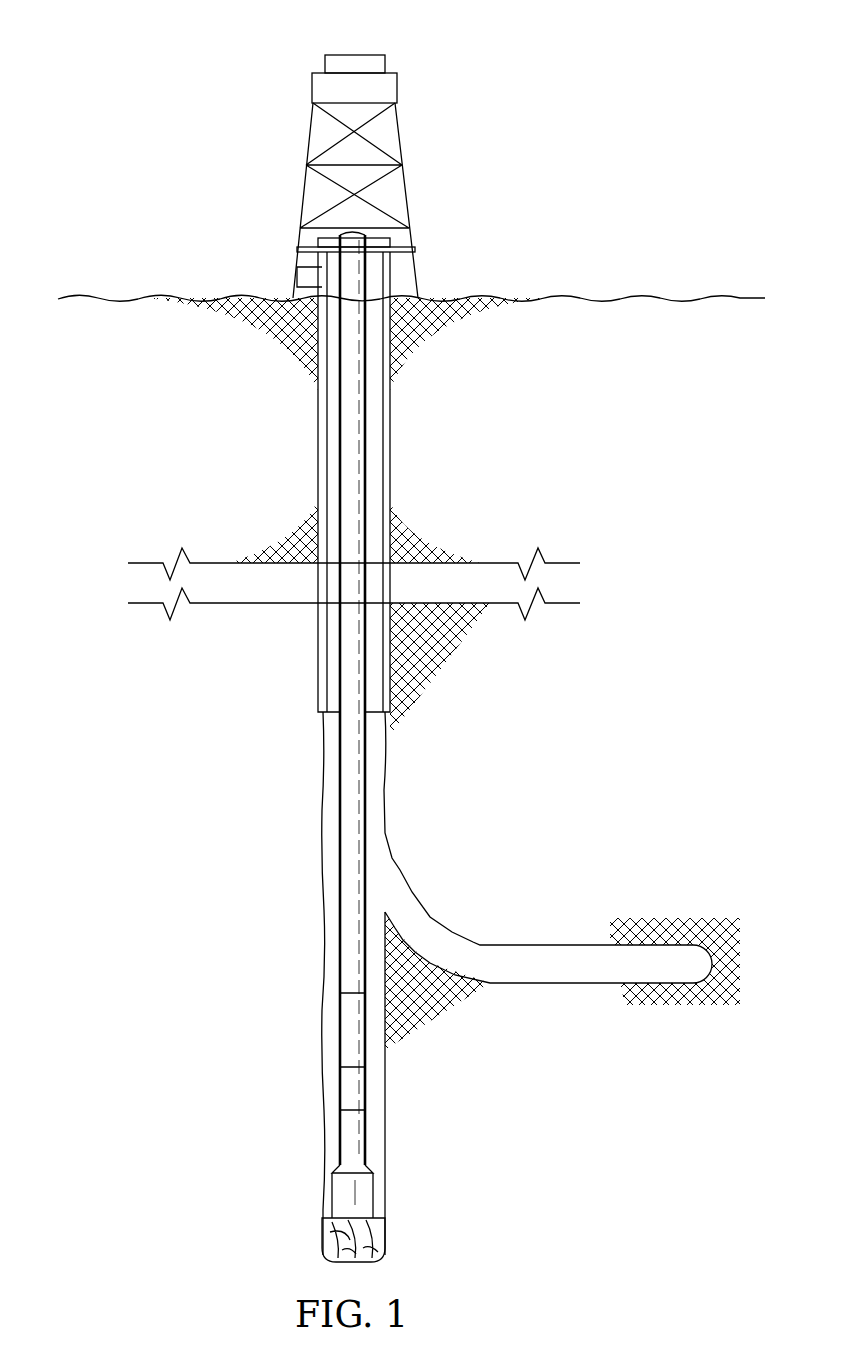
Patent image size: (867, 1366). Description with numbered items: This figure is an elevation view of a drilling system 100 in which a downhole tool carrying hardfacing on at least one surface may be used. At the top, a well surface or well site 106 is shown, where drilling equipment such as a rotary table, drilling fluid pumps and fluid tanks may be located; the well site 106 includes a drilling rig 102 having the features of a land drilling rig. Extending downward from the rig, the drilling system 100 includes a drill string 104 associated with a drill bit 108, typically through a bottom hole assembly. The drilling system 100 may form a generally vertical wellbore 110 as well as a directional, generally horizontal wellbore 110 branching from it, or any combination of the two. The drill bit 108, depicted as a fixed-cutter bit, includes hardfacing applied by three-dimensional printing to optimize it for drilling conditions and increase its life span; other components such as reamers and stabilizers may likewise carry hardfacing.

The drilling system 100 is at (574, 66).
The drilling rig 102 is at (236, 106).
The drill string 104 is at (348, 925).
The well surface or well site 106 is at (404, 271).
The drill bit 108 is at (330, 1232).
The wellbore 110 is at (332, 822).